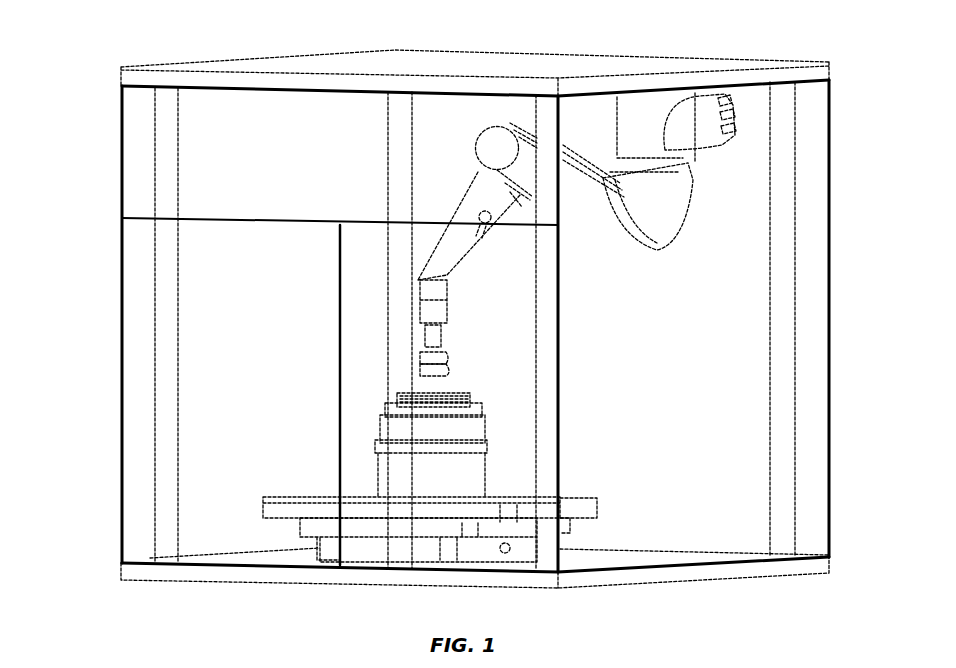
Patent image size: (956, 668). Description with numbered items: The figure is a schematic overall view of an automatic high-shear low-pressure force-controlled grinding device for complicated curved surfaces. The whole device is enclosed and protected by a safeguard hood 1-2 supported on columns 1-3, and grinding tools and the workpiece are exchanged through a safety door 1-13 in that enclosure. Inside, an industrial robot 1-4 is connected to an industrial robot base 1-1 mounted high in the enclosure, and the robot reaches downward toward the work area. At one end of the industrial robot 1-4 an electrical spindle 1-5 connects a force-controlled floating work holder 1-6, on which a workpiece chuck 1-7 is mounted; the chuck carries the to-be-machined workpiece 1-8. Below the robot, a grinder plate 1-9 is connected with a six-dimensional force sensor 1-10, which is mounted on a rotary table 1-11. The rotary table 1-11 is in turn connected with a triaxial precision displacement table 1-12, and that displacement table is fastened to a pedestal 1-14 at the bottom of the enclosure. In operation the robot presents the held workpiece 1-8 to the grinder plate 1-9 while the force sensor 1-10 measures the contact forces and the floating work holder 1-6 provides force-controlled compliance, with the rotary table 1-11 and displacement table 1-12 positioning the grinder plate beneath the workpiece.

The industrial robot base 1-1 is at (297, 70).
The safeguard hood 1-2 is at (287, 130).
The column 1-3 is at (163, 135).
The industrial robot 1-4 is at (467, 210).
The electrical spindle 1-5 is at (428, 305).
The force-controlled floating work holder 1-6 is at (428, 333).
The workpiece chuck 1-7 is at (422, 357).
The to-be-machined workpiece 1-8 is at (422, 368).
The grinder plate 1-9 is at (427, 398).
The six-dimensional force sensor 1-10 is at (422, 430).
The rotary table 1-11 is at (422, 468).
The triaxial precision displacement table 1-12 is at (378, 525).
The safety door 1-13 is at (237, 525).
The pedestal 1-14 is at (253, 575).